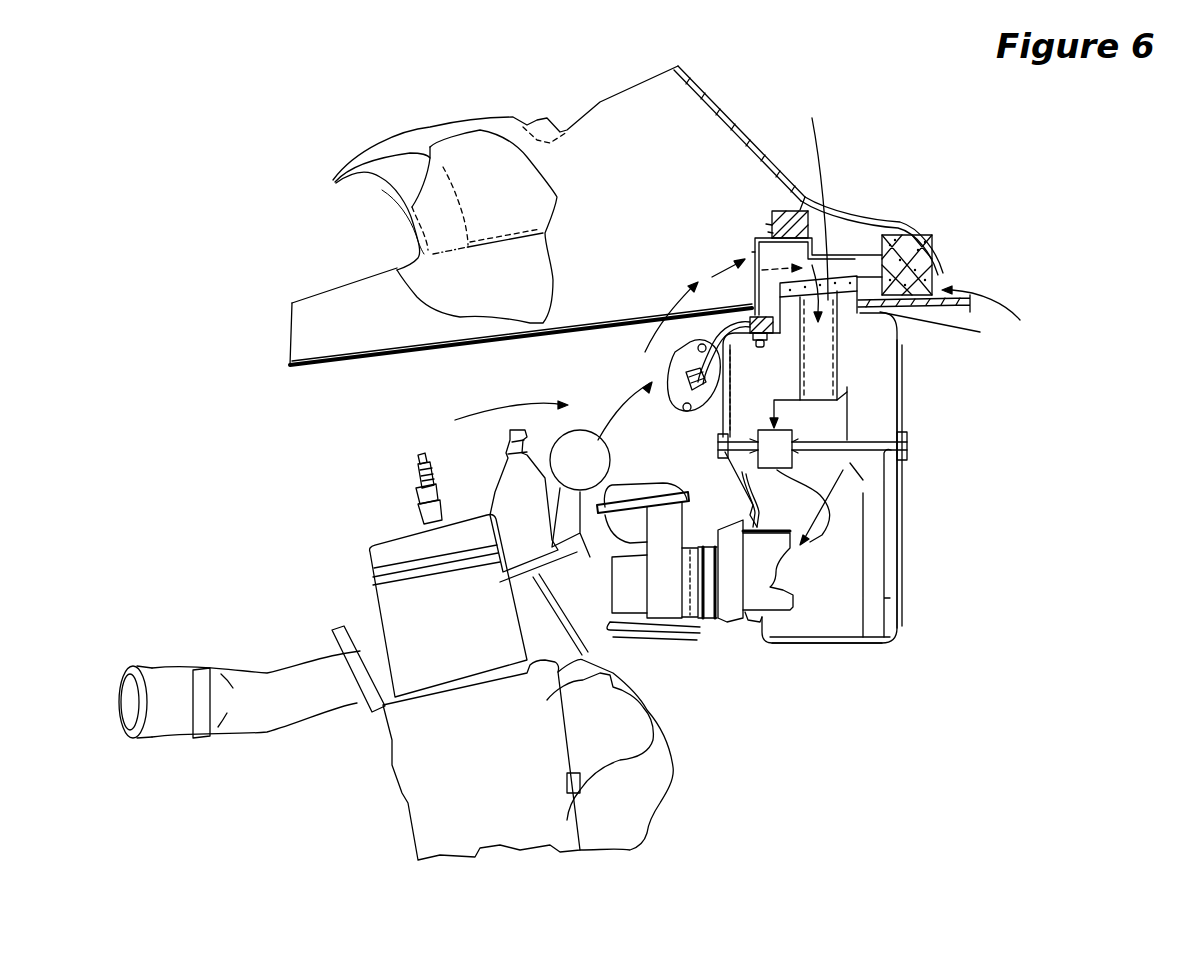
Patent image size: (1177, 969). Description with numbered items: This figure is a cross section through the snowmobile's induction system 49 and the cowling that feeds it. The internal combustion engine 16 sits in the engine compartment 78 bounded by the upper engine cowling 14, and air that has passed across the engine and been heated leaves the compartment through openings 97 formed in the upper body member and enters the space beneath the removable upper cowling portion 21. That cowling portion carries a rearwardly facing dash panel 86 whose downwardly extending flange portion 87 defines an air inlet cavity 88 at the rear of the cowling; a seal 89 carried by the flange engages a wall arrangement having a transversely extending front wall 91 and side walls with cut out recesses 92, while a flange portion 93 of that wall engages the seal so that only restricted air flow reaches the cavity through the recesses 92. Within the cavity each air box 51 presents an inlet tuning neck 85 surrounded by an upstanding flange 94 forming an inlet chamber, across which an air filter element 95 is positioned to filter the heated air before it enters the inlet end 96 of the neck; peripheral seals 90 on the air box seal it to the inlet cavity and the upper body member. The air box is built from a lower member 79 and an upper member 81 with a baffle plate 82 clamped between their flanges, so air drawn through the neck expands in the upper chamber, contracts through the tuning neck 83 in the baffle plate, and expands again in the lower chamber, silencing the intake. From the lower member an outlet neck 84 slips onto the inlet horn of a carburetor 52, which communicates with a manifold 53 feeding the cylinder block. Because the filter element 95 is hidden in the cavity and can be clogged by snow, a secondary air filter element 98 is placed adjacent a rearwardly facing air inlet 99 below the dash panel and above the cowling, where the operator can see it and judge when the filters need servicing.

The upper engine cowling 14 is at (453, 347).
The internal combustion engine 16 is at (386, 765).
The upper cowling portion 21 is at (333, 172).
The induction system 49 is at (917, 505).
The air box 51 is at (828, 650).
The carburetor 52 is at (710, 628).
The manifold 53 is at (663, 723).
The engine compartment 78 is at (388, 422).
The lower member 79 is at (890, 598).
The upper member 81 is at (883, 390).
The baffle plate 82 is at (855, 452).
The tuning neck 83 is at (820, 470).
The outlet neck 84 is at (750, 627).
The inlet tuning neck 85 is at (702, 412).
The dash panel 86 is at (728, 118).
The flange portion 87 is at (800, 207).
The air inlet cavity 88 is at (870, 230).
The seal 89 is at (768, 225).
The peripheral seal 90 is at (890, 313).
The front wall 91 is at (752, 252).
The cut out recess 92 is at (847, 268).
The flange portion 93 is at (773, 233).
The upstanding flange 94 is at (790, 343).
The air filter element 95 is at (843, 333).
The inlet end 96 is at (801, 200).
The opening 97 is at (567, 327).
The secondary air filter element 98 is at (940, 243).
The rearwardly facing air inlet 99 is at (943, 280).